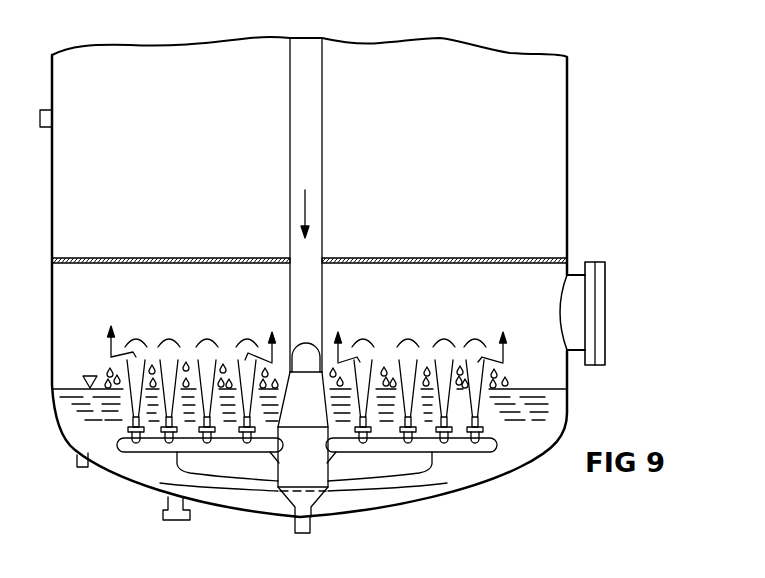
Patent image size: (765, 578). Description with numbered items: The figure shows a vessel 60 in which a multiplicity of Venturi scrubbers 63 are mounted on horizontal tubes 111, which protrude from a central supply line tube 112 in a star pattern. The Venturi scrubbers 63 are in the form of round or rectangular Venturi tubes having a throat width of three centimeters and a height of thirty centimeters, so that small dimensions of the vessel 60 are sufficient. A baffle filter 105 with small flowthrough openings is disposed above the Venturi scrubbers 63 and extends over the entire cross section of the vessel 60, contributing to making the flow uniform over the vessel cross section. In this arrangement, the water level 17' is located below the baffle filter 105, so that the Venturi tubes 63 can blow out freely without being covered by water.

The vessel 60 is at (567, 137).
The central supply line tube 112 is at (322, 164).
The baffle filter 105 is at (378, 257).
The water level 17' is at (87, 362).
The horizontal tubes 111 is at (227, 452).
The Venturi scrubbers 63 is at (477, 441).